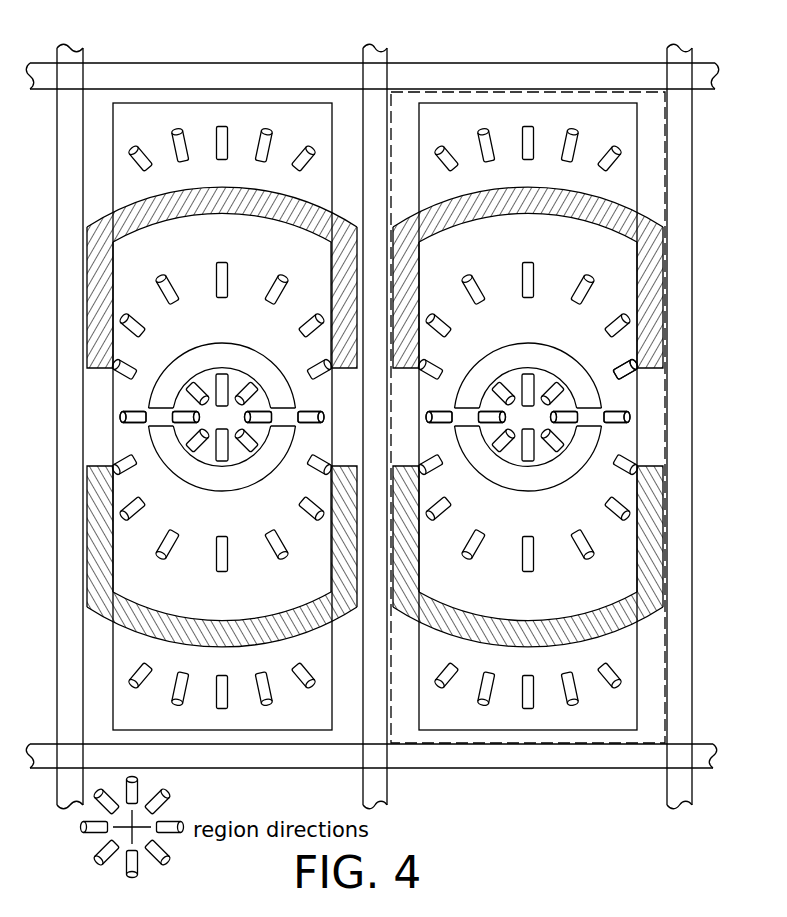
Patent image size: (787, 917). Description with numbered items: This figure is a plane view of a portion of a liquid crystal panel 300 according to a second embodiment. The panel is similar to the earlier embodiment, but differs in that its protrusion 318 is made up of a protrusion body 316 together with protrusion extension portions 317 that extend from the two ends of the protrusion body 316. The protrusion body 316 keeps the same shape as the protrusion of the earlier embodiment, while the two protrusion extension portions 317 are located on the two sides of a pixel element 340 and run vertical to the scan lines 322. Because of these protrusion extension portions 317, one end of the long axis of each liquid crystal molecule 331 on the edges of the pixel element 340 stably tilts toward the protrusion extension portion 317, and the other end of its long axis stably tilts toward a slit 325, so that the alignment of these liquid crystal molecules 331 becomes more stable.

The liquid crystal panel 300 is at (390, 31).
The protrusion 318 is at (548, 178).
The scan lines 322 is at (628, 77).
The pixel element 340 is at (664, 175).
The protrusion body 316 is at (617, 218).
The protrusion extension portions 317 is at (650, 307).
The liquid crystal molecule 331 is at (628, 377).
The slit 325 is at (588, 433).